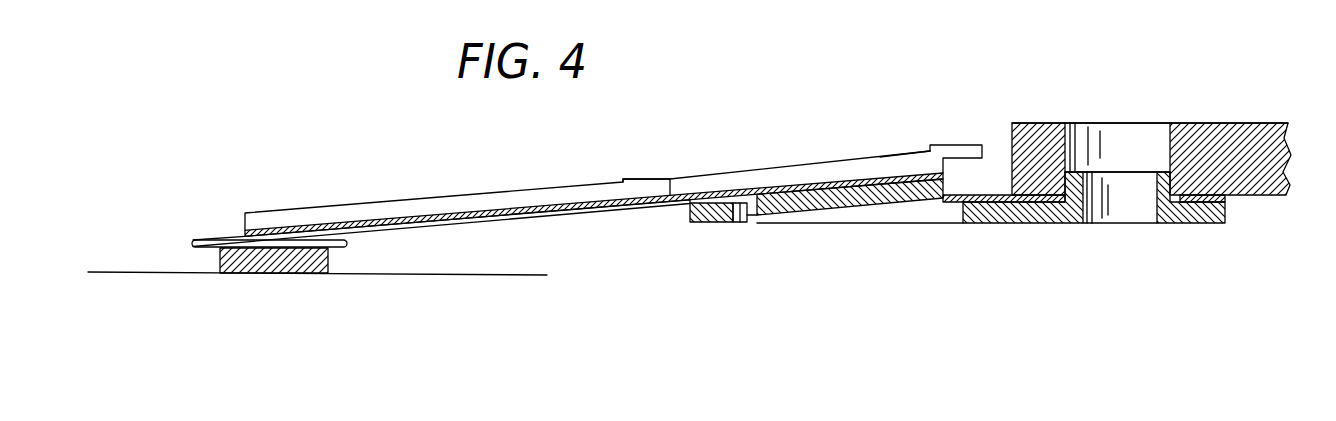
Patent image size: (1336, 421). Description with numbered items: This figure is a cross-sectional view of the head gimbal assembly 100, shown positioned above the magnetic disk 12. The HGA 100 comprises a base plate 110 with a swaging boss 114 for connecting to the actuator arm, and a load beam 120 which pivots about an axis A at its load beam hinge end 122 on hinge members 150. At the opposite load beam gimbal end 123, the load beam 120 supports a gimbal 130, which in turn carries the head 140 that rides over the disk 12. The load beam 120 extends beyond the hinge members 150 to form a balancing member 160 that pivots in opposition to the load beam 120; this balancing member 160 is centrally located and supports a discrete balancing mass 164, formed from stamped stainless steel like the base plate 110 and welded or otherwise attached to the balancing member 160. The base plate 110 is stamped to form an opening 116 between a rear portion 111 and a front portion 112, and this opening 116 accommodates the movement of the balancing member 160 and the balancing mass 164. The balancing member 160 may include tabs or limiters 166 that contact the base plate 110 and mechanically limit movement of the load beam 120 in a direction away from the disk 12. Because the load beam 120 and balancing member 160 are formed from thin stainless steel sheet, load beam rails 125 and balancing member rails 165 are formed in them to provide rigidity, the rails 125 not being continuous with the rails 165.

The magnetic disk 12 is at (468, 273).
The head gimbal assembly 100 is at (1102, 50).
The base plate 110 is at (1058, 232).
The rear portion 111 is at (1200, 223).
The front portion 112 is at (684, 208).
The swaging boss 114 is at (1165, 175).
The opening 116 is at (953, 203).
The load beam 120 is at (487, 213).
The load beam hinge end 122 is at (672, 183).
The load beam gimbal end 123 is at (264, 222).
The load beam rails 125 is at (387, 208).
The gimbal 130 is at (228, 241).
The head 140 is at (262, 275).
The hinge members 150 is at (730, 222).
The balancing member 160 is at (780, 192).
The balancing mass 164 is at (906, 208).
The balancing member rails 165 is at (893, 158).
The limiters 166 is at (967, 147).
The axis A is at (713, 185).